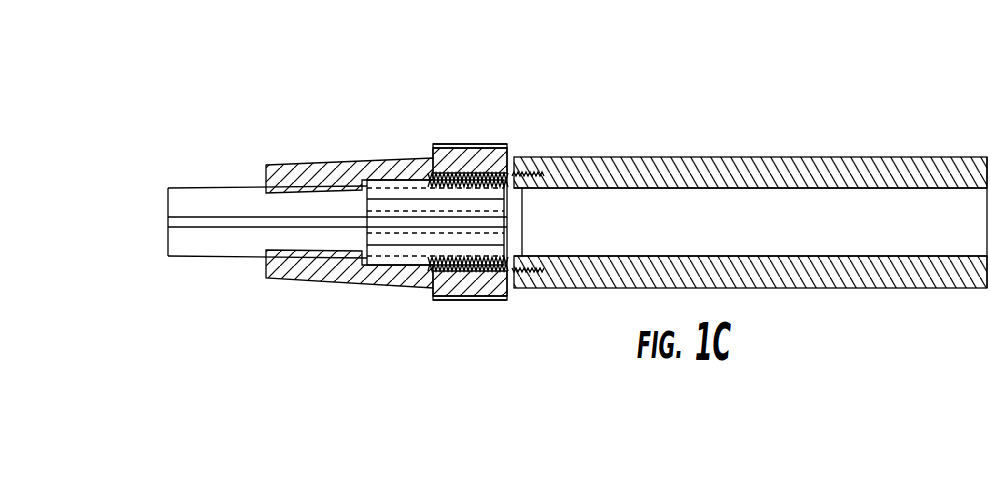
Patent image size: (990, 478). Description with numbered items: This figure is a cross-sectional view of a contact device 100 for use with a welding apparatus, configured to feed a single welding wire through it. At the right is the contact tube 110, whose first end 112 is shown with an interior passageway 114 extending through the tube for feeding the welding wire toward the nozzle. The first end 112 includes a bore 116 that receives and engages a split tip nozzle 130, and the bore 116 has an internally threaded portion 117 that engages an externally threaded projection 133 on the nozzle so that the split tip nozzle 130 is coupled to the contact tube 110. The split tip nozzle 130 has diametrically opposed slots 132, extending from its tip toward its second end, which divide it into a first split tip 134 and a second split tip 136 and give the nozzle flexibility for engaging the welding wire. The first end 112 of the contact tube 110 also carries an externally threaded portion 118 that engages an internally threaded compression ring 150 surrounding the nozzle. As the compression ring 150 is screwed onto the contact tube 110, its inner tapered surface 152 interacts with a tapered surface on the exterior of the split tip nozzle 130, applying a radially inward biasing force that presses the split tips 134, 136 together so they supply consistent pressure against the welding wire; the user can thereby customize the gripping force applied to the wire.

The contact device 100 is at (200, 30).
The contact tube 110 is at (908, 157).
The first end 112 is at (550, 157).
The interior passageway 114 is at (675, 211).
The bore 116 is at (515, 230).
The internally threaded portion 117 is at (493, 300).
The externally threaded portion 118 is at (465, 175).
The split tip nozzle 130 is at (210, 200).
The slots 132 is at (243, 226).
The externally threaded projection 133 is at (493, 300).
The first split tip 134 is at (250, 195).
The second split tip 136 is at (183, 255).
The compression ring 150 is at (407, 288).
The inner tapered surface 152 is at (387, 170).